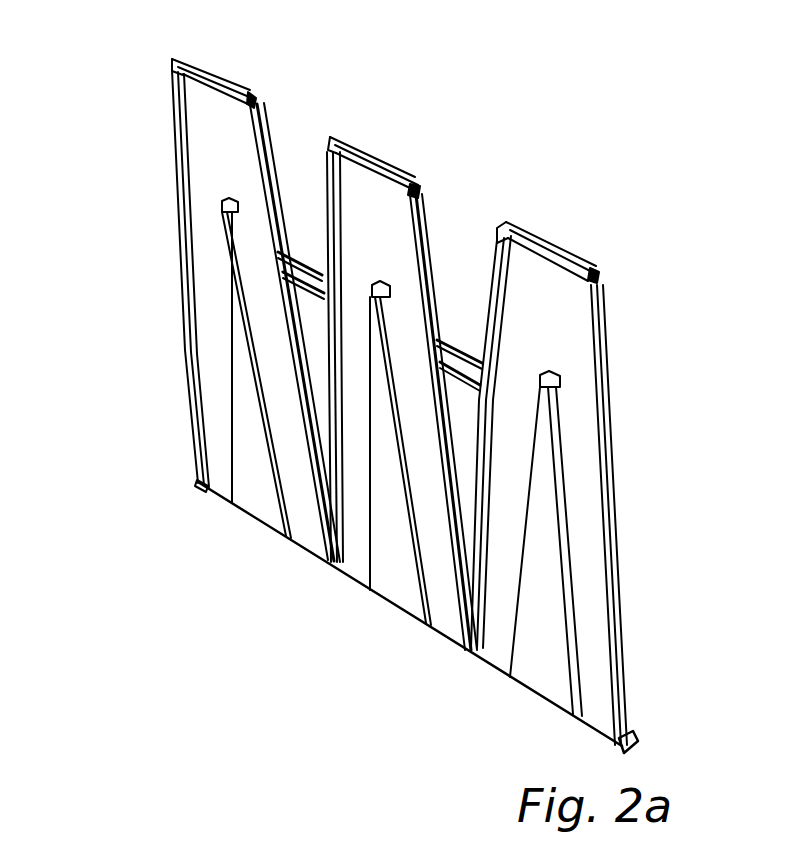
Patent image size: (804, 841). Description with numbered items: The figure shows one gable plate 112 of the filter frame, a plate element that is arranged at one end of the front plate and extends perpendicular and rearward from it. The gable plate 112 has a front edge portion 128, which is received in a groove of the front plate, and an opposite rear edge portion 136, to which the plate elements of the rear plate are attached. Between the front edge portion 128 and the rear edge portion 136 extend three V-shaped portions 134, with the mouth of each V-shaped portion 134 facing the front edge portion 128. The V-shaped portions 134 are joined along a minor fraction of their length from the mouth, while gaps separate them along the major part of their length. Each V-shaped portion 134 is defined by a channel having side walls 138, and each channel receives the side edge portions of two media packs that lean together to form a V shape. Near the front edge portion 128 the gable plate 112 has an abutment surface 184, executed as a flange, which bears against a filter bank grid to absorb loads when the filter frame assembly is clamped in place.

The gable plate 112 is at (468, 115).
The front edge portion 128 is at (432, 635).
The V-shaped portion 134 is at (233, 130).
The rear edge portion 136 is at (207, 70).
The side wall 138 is at (183, 283).
The abutment surface 184 is at (637, 743).